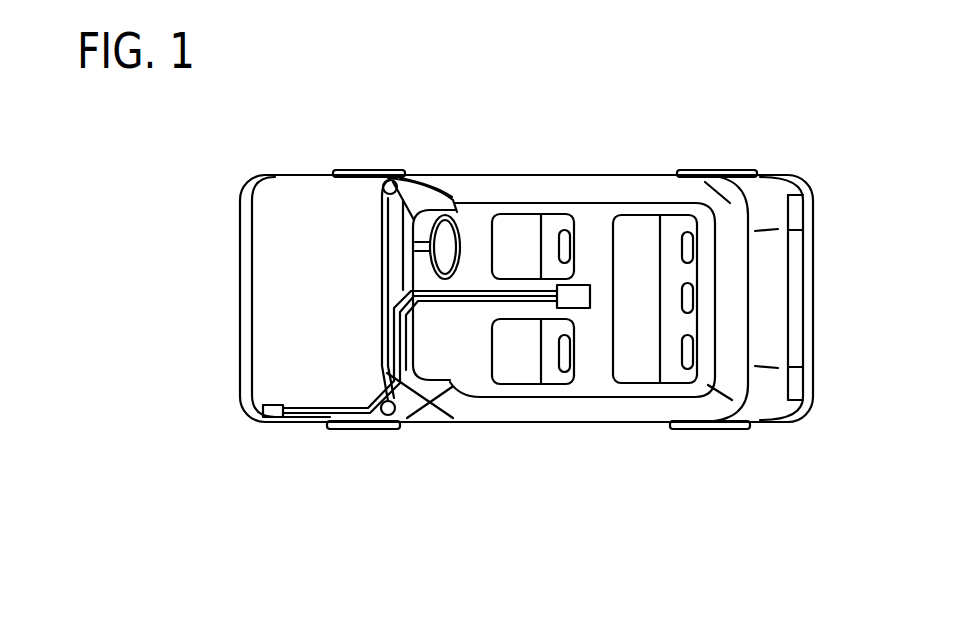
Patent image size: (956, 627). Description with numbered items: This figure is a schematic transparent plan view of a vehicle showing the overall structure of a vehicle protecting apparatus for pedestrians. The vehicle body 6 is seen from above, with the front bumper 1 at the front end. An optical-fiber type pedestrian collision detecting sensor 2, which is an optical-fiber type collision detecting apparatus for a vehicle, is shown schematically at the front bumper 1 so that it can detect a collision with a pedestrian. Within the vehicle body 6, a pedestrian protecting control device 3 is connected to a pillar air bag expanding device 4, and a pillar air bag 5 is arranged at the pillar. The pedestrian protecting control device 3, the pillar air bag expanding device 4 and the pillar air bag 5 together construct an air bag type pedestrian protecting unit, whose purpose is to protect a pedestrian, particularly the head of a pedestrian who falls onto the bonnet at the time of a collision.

The front bumper 1 is at (238, 296).
The optical-fiber type pedestrian collision detecting sensor 2 is at (271, 420).
The pedestrian protecting control device 3 is at (583, 285).
The pillar air bag expanding device 4 is at (393, 415).
The pillar air bag 5 is at (425, 192).
The vehicle body 6 is at (309, 176).